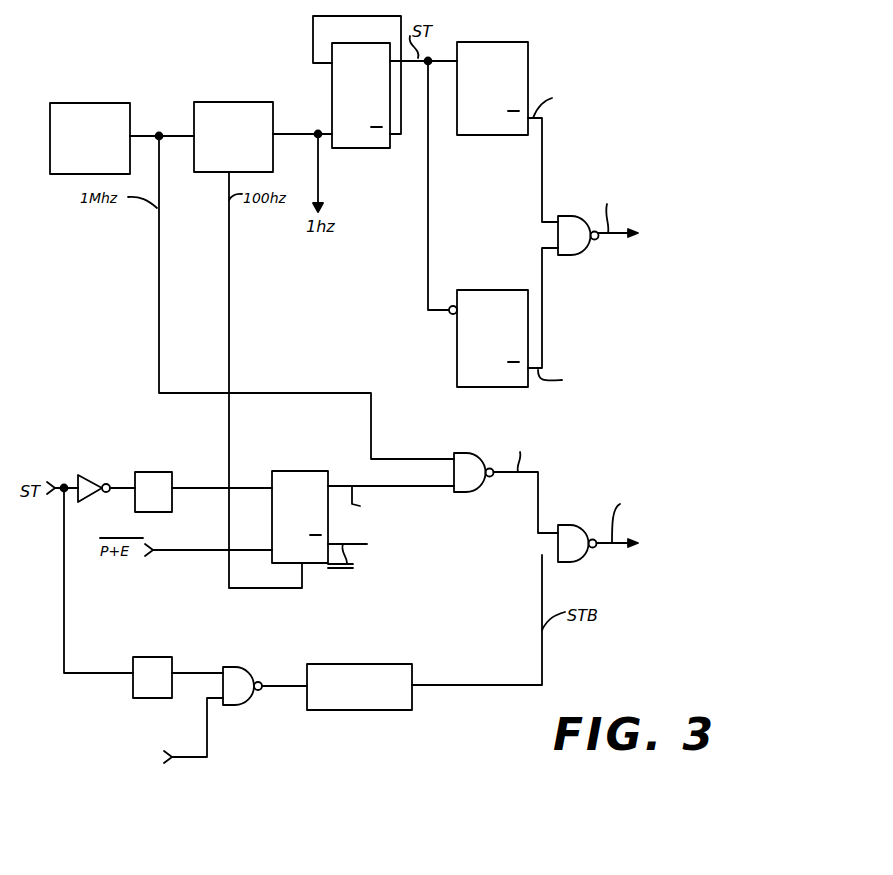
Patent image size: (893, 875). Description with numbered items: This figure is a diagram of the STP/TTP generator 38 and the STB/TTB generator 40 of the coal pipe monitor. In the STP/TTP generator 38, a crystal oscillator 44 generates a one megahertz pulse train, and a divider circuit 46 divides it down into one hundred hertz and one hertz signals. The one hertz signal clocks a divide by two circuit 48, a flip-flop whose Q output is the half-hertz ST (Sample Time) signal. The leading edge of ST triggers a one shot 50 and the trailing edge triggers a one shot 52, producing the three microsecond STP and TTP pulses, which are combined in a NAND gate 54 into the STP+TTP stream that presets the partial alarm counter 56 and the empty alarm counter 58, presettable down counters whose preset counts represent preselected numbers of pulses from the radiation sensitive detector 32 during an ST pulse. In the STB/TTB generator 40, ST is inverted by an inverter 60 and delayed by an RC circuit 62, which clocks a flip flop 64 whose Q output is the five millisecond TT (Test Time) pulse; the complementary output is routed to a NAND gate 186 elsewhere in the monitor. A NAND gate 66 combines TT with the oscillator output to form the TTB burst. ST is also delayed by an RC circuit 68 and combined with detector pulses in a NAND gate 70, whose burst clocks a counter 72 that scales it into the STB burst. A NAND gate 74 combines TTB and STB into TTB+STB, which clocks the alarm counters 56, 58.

The STP/TTP generator 38 is at (633, 75).
The STB/TTB generator 40 is at (587, 458).
The crystal oscillator 44 is at (108, 102).
The divider circuit 46 is at (258, 102).
The divide by 2 circuit 48 is at (357, 148).
The one shot 50 is at (517, 42).
The one shot 52 is at (500, 290).
The NAND gate 54 is at (583, 255).
The partial alarm counter 56 is at (692, 268).
The empty alarm counter 58 is at (690, 576).
The inverter 60 is at (93, 475).
The RC circuit 62 is at (163, 472).
The flip flop 64 is at (303, 471).
The NAND gate 66 is at (490, 476).
The RC circuit 68 is at (170, 638).
The NAND gate 70 is at (240, 667).
The counter 72 is at (360, 664).
The NAND gate 74 is at (590, 497).
The detector 32 is at (111, 781).
The NAND gate (FIG. 13) 186 is at (421, 553).